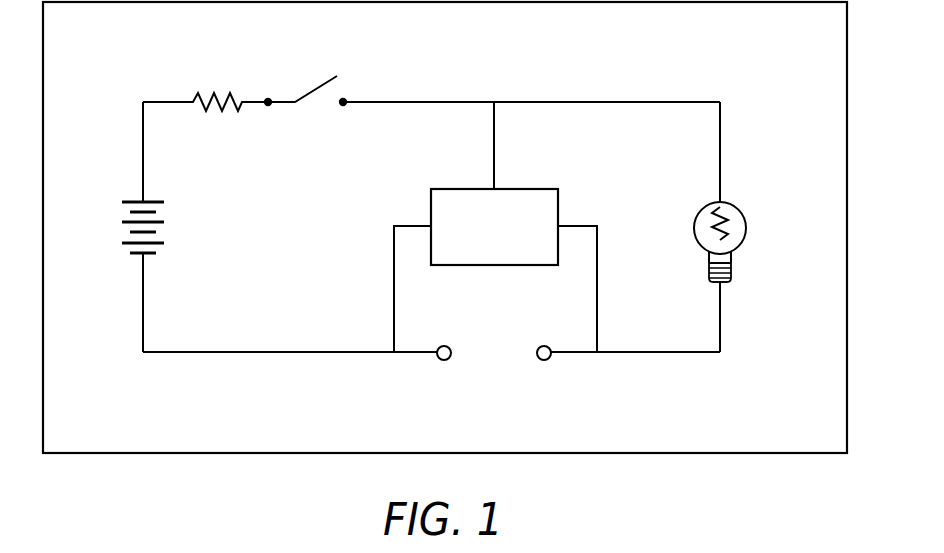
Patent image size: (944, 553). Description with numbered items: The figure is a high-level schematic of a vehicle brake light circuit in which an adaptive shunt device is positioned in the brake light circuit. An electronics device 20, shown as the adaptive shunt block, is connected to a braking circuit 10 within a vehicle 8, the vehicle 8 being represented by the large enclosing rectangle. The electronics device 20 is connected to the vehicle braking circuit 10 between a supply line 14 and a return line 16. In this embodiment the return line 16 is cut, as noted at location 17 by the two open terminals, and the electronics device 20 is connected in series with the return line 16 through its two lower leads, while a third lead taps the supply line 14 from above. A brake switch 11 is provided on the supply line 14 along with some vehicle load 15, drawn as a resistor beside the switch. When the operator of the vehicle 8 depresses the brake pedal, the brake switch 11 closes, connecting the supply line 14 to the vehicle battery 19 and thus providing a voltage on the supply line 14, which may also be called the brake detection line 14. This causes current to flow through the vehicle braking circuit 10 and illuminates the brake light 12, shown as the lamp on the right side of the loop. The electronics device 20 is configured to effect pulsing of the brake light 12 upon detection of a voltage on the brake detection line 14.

The vehicle 8 is at (672, 455).
The braking circuit 10 is at (243, 354).
The brake switch 11 is at (310, 93).
The brake light 12 is at (748, 229).
The supply line 14 is at (427, 100).
The vehicle load 15 is at (207, 95).
The return line 16 is at (318, 354).
The cut location 17 is at (444, 361).
The vehicle battery 19 is at (120, 222).
The electronics device 20 is at (477, 266).